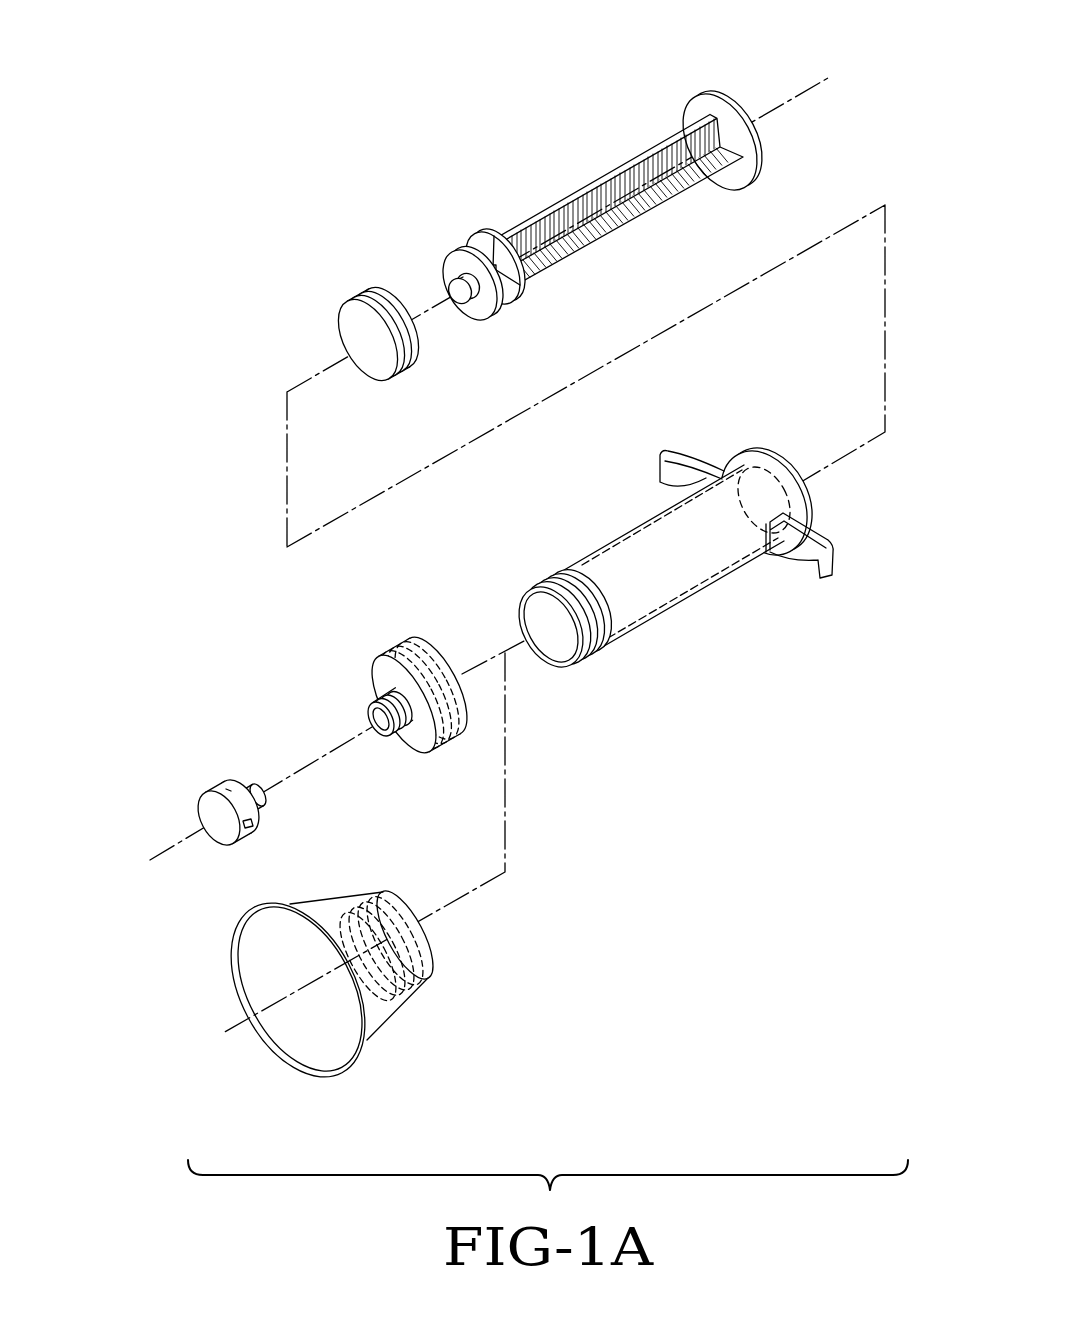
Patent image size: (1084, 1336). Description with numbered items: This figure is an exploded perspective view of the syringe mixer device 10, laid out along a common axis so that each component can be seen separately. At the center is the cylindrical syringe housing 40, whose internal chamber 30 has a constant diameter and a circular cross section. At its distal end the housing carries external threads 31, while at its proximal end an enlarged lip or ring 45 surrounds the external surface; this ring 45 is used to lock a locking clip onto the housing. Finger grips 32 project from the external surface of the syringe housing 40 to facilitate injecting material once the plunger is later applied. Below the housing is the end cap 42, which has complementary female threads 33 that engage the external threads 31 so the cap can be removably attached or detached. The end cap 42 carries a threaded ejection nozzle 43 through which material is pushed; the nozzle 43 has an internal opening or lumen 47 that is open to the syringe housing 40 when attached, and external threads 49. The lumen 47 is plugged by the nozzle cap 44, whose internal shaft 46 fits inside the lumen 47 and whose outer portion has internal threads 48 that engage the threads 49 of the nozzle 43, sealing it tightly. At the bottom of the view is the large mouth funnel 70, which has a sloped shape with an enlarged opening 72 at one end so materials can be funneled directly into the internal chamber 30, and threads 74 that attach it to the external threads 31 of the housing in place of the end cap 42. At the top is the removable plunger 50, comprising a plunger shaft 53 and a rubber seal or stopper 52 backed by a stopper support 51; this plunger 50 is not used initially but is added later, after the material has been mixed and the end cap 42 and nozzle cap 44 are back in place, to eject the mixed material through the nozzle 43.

The syringe mixer device 10 is at (357, 122).
The internal chamber 30 is at (686, 540).
The external threads 31 is at (598, 636).
The finger grips 32 is at (668, 470).
The female threads 33 is at (438, 657).
The syringe housing 40 is at (686, 540).
The end cap 42 is at (403, 685).
The threaded nozzle 43 is at (376, 706).
The nozzle cap 44 is at (186, 770).
The ring 45 is at (775, 470).
The internal shaft 46 is at (256, 790).
The lumen 47 is at (386, 730).
The internal threads 48 is at (200, 808).
The threads 49 is at (410, 736).
The removable plunger 50 is at (596, 204).
The stopper support 51 is at (458, 266).
The rubber seal or stopper 52 is at (350, 322).
The plunger shaft 53 is at (678, 194).
The large mouth funnel 70 is at (306, 1015).
The enlarged opening 72 is at (268, 955).
The threads 74 is at (415, 967).